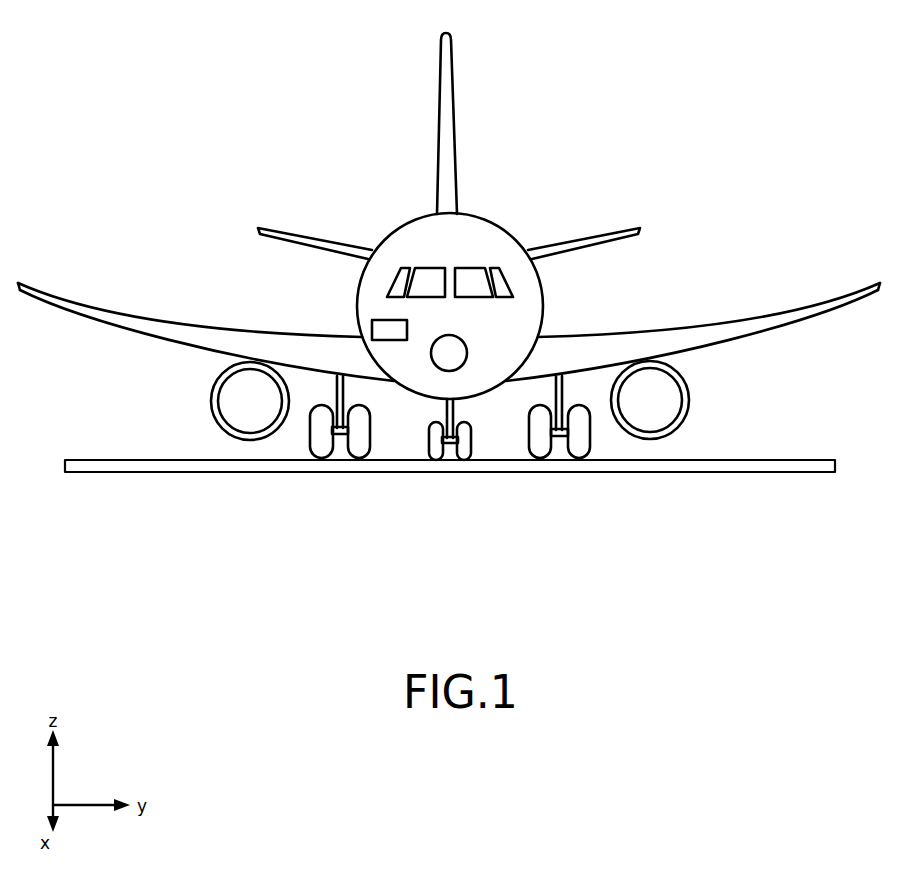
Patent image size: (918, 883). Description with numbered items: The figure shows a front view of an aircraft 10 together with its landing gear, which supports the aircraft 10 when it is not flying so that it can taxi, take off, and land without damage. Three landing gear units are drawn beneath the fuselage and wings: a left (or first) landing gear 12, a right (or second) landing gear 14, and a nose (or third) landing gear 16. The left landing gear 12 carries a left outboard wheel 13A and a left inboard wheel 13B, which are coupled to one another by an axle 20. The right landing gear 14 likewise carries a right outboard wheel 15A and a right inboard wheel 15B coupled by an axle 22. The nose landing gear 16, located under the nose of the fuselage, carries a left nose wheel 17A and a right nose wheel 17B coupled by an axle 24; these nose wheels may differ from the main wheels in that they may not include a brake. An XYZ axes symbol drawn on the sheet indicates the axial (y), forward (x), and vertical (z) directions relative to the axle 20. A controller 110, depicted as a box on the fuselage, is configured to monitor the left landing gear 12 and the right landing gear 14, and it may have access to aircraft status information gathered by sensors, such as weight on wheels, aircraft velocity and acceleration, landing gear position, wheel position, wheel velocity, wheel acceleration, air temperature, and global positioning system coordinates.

The aircraft 10 is at (282, 122).
The left landing gear 12 is at (640, 409).
The left outboard wheel 13A is at (592, 449).
The left inboard wheel 13B is at (553, 398).
The right landing gear 14 is at (261, 482).
The right outboard wheel 15A is at (311, 446).
The right inboard wheel 15B is at (376, 456).
The nose landing gear 16 is at (491, 429).
The left nose wheel 17A is at (427, 457).
The right nose wheel 17B is at (473, 456).
The axle 20 is at (557, 445).
The axle 22 is at (340, 438).
The axle 24 is at (450, 445).
The controller 110 is at (380, 328).